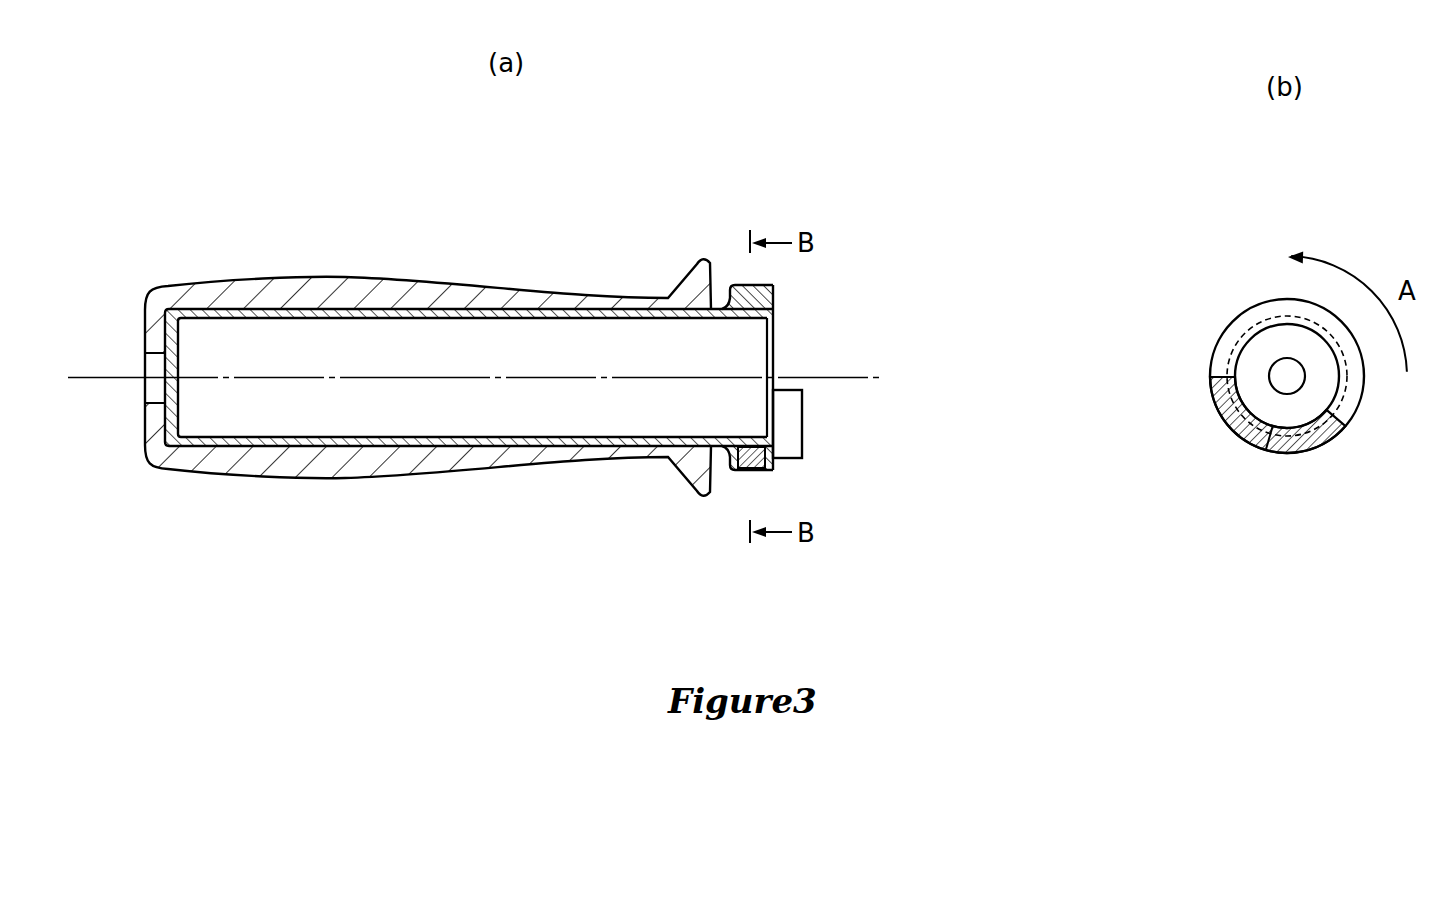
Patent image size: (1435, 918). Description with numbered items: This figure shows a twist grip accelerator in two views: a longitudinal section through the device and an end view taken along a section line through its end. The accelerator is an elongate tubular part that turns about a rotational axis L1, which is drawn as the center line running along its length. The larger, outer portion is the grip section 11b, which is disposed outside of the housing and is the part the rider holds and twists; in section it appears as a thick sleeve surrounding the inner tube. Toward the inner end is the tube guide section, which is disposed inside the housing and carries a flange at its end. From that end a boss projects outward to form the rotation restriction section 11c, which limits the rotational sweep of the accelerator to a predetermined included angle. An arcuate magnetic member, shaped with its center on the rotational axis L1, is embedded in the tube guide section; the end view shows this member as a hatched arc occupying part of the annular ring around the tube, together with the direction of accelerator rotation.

The grip section 11b is at (312, 278).
The rotation restriction section 11c is at (803, 438).
The rotational axis L1 is at (114, 377).